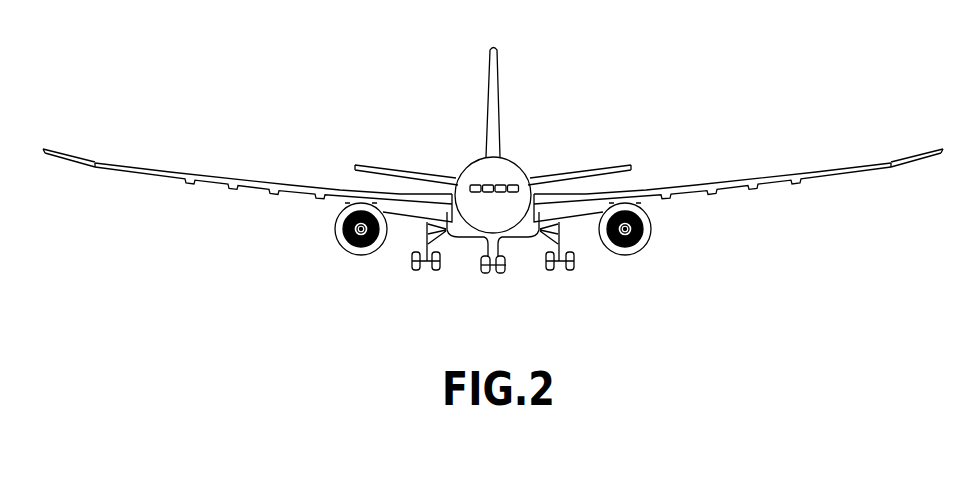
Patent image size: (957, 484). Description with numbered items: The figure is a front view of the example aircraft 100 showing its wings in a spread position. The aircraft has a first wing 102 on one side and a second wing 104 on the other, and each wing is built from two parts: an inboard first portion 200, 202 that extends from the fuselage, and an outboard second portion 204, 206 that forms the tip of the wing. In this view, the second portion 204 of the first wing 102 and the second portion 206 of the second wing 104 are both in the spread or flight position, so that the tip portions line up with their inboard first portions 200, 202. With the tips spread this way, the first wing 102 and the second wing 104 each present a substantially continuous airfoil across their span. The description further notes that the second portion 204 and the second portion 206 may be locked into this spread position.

The aircraft 100 is at (493, 161).
The first wing 102 is at (738, 191).
The second wing 104 is at (247, 178).
The first portion 200 is at (672, 200).
The first portion 202 is at (218, 180).
The second portion 204 is at (918, 156).
The second portion 206 is at (67, 153).